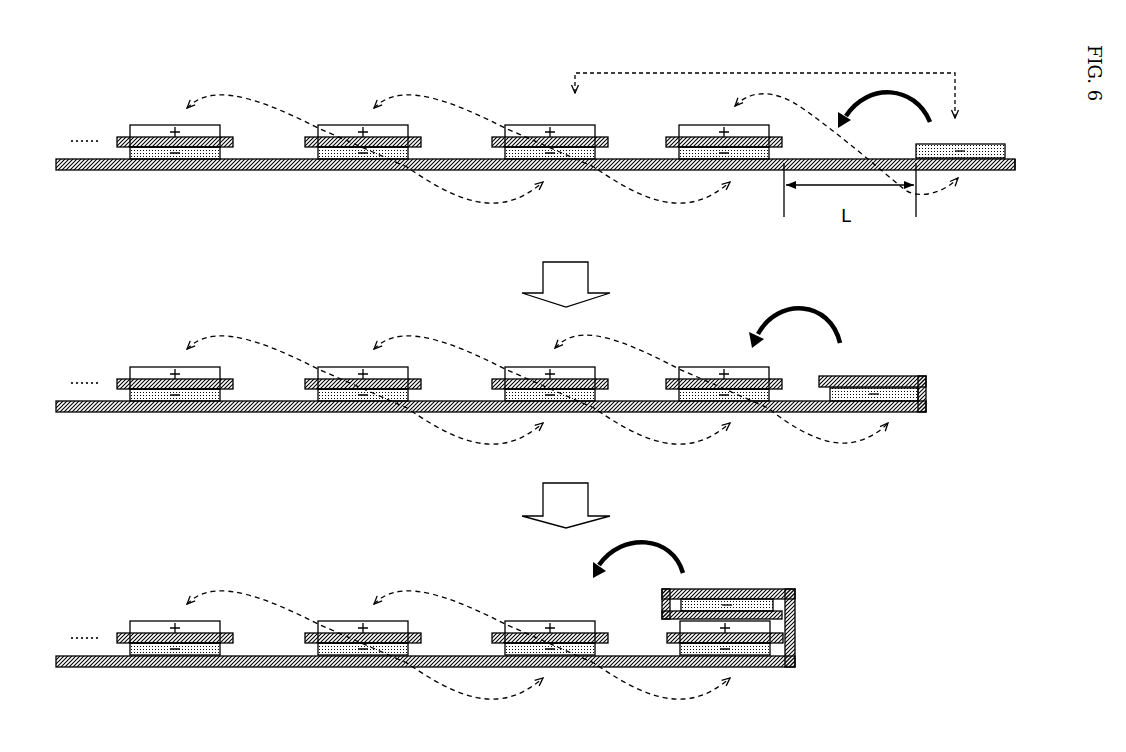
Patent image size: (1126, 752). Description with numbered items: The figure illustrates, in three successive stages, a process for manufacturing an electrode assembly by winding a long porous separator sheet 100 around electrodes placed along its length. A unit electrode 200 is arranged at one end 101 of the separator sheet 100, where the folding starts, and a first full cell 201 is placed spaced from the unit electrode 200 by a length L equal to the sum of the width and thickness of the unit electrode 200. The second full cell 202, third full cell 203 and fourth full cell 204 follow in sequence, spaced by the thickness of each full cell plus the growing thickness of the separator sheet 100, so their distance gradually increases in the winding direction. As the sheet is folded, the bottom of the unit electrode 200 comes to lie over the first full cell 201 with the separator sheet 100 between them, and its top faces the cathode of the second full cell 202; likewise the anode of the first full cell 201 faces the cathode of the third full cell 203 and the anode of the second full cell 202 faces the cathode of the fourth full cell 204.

The separator sheet 100 is at (250, 171).
The one end of the separator sheet 101 is at (1015, 171).
The unit electrode 200 is at (963, 143).
The first full cell 201 is at (745, 171).
The second full cell 202 is at (541, 125).
The third full cell 203 is at (354, 125).
The fourth full cell 204 is at (172, 125).